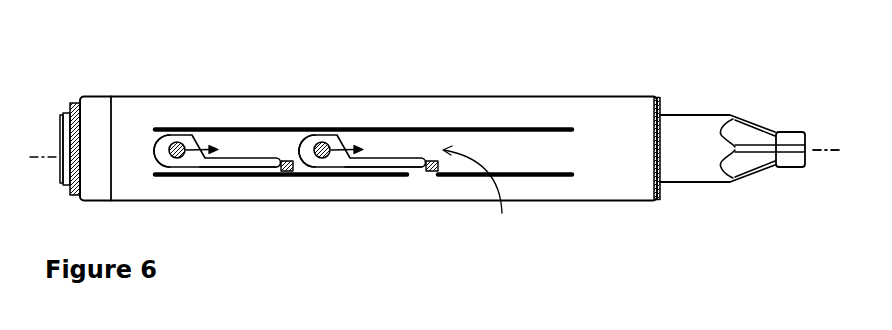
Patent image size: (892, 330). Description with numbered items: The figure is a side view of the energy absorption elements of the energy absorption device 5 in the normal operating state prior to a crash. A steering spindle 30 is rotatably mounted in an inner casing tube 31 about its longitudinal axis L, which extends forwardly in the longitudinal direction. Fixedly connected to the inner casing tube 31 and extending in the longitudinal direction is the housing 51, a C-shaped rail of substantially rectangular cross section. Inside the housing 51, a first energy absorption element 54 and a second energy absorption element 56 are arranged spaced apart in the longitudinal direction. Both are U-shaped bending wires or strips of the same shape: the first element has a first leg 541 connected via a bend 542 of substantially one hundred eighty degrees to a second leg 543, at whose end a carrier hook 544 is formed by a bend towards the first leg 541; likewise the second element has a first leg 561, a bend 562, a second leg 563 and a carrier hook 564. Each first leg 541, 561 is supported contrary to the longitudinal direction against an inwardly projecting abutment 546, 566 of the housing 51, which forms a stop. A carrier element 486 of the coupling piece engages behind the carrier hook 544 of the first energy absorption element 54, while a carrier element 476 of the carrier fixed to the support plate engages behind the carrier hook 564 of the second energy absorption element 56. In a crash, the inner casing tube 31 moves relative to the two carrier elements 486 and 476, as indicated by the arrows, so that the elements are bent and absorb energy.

The energy absorption device 5 is at (502, 213).
The steering spindle 30 is at (703, 133).
The inner casing tube 31 is at (610, 116).
The housing 51 is at (489, 128).
The first energy absorption element 54 is at (225, 158).
The first leg 541 is at (245, 165).
The bend 542 is at (158, 160).
The second leg 543 is at (172, 144).
The carrier hook 544 is at (188, 146).
The abutment 546 is at (288, 170).
The second energy absorption element 56 is at (387, 163).
The first leg 561 is at (372, 167).
The bend 562 is at (303, 150).
The second leg 563 is at (319, 142).
The carrier hook 564 is at (336, 146).
The abutment 566 is at (432, 168).
The carrier element 476 is at (308, 135).
The carrier element 486 is at (157, 140).
The longitudinal axis L is at (832, 148).